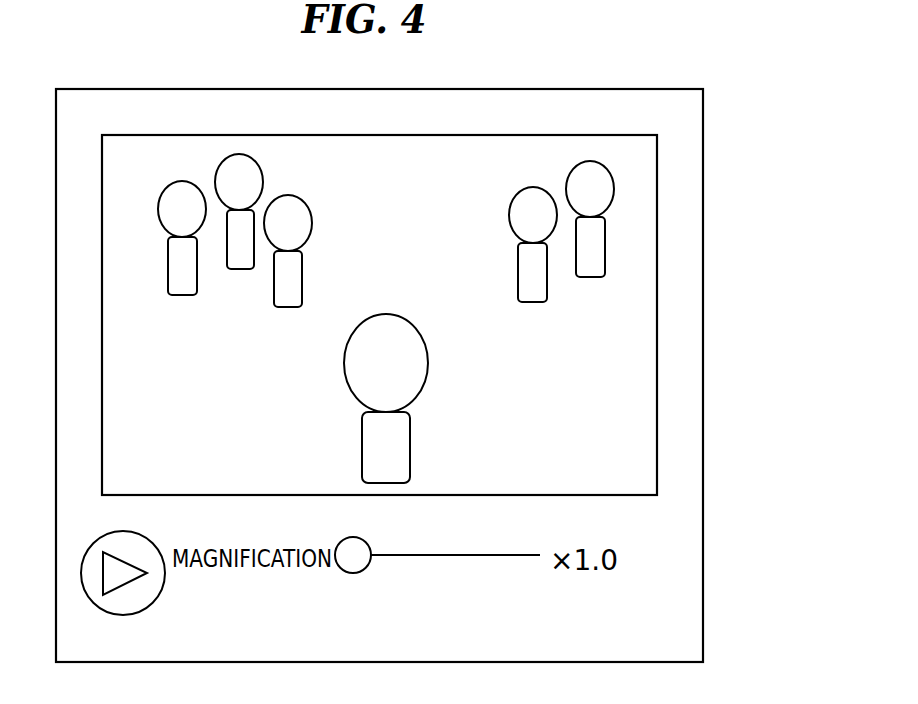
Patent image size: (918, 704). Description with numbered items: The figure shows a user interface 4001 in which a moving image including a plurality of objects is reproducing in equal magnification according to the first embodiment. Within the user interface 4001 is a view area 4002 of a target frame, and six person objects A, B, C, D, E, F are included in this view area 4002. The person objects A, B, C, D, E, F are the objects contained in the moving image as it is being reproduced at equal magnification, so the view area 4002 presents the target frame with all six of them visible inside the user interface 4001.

The user interface 4001 is at (600, 89).
The view area 4002 is at (448, 315).
The person object A is at (182, 238).
The person object B is at (239, 211).
The person object C is at (288, 251).
The person object D is at (533, 244).
The person object E is at (590, 219).
The person object F is at (386, 398).